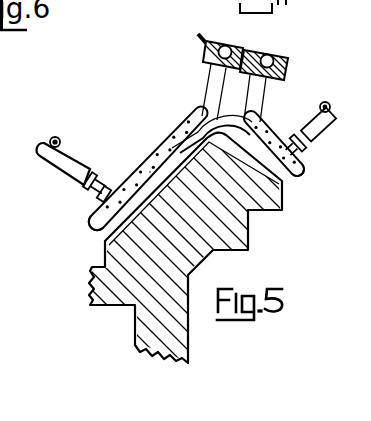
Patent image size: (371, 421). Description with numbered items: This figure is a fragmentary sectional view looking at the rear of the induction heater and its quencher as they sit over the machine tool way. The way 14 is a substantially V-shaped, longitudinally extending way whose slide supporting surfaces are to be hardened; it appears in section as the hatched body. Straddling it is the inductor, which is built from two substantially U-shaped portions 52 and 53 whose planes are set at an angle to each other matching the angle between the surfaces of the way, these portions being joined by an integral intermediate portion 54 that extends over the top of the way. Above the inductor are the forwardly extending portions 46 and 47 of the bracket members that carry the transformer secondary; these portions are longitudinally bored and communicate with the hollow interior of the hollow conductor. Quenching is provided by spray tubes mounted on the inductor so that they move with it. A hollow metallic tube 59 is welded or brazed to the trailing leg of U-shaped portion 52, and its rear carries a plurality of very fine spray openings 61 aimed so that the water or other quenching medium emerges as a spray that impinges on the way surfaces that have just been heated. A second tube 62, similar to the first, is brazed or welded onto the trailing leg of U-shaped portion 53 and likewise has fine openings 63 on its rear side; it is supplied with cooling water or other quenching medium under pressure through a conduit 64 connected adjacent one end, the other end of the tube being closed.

The way 14 is at (238, 228).
The forwardly extending portion 46 is at (288, 61).
The forwardly extending portion 47 is at (206, 50).
The U-shaped portion 52 is at (95, 230).
The U-shaped portion 53 is at (304, 174).
The intermediate portion 54 is at (236, 114).
The hollow metallic tube 59 is at (184, 118).
The spray openings 61 is at (150, 172).
The second tube 62 is at (308, 150).
The fine openings 63 is at (271, 134).
The conduit 64 is at (316, 111).